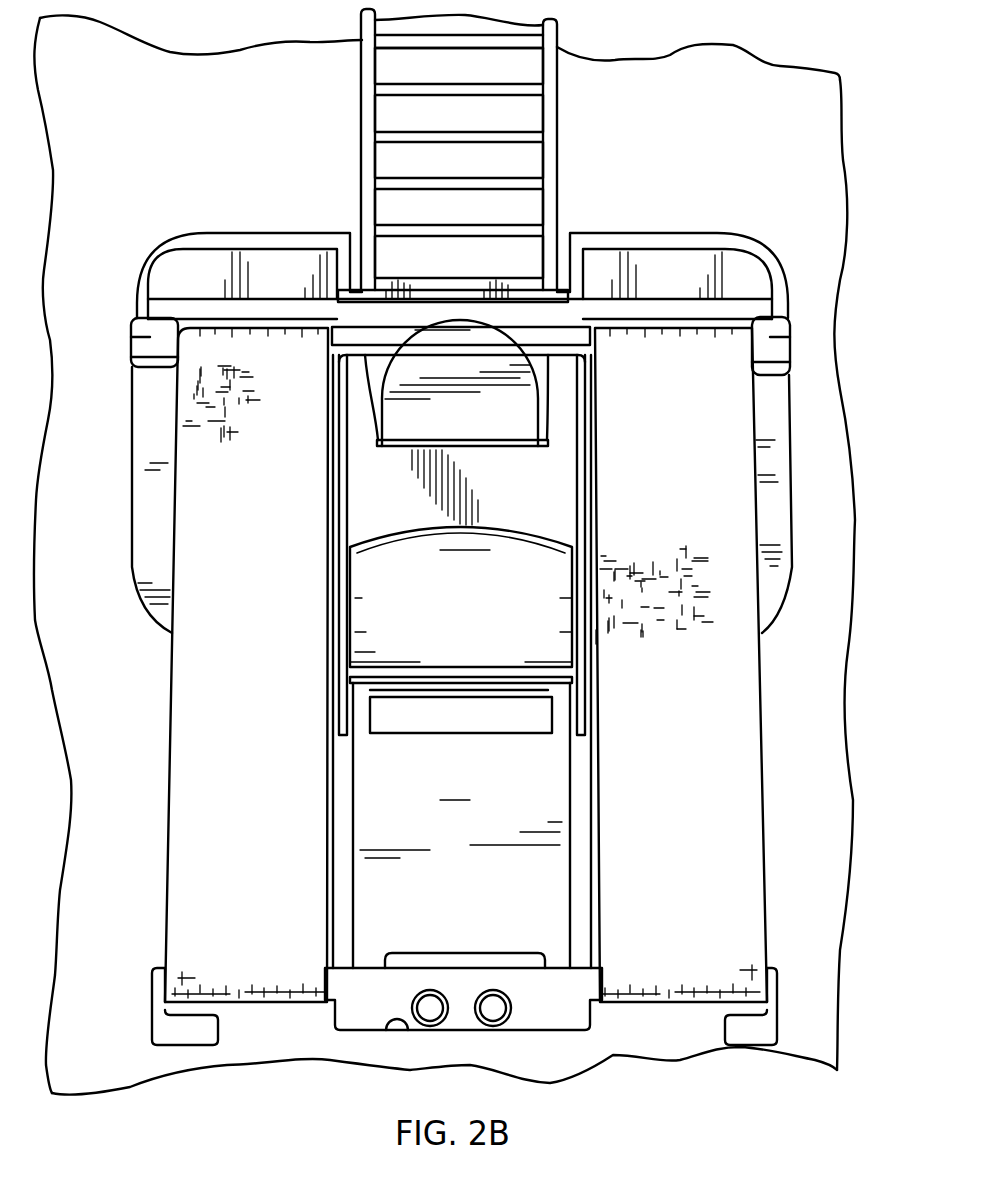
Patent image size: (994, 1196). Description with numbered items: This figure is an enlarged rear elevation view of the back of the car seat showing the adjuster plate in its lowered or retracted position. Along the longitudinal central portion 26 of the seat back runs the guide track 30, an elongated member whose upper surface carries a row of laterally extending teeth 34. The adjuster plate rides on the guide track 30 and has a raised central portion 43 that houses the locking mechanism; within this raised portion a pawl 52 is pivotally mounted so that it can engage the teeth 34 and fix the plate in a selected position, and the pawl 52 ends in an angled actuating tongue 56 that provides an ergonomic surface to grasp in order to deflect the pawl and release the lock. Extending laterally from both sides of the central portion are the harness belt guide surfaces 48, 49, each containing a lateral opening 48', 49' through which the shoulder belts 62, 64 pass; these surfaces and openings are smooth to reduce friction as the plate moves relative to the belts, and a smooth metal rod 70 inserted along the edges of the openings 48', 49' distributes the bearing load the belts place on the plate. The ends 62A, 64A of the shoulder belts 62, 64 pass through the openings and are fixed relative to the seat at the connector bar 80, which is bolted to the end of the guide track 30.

The longitudinal central portion 26 is at (765, 106).
The teeth 34 is at (510, 107).
The lateral opening 49' is at (454, 253).
The lateral opening 48' is at (649, 270).
The smooth metal rod 70 is at (565, 330).
The harness belt guide surface 49 is at (116, 475).
The harness belt guide surface 48 is at (792, 475).
The shoulder belt 62 is at (210, 732).
The shoulder belt 64 is at (668, 760).
The pawl 52 is at (445, 357).
The angled actuating tongue 56 is at (470, 362).
The raised central portion 43 is at (530, 495).
The guide track 30 is at (478, 799).
The connector bar 80 is at (523, 1000).
The end of shoulder belt 62A is at (266, 958).
The end of shoulder belt 64A is at (672, 943).